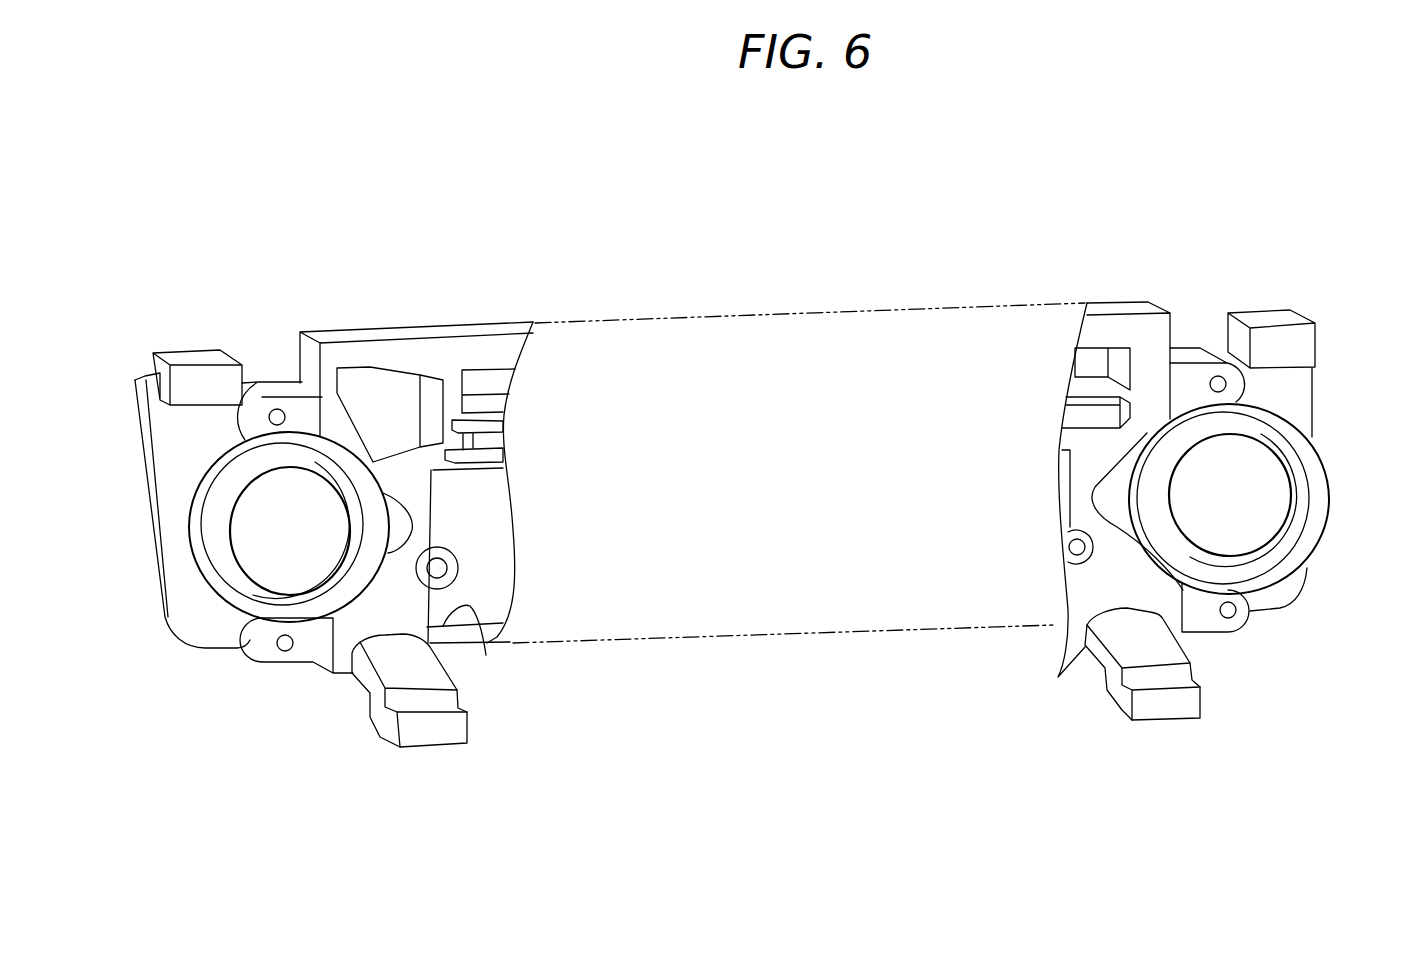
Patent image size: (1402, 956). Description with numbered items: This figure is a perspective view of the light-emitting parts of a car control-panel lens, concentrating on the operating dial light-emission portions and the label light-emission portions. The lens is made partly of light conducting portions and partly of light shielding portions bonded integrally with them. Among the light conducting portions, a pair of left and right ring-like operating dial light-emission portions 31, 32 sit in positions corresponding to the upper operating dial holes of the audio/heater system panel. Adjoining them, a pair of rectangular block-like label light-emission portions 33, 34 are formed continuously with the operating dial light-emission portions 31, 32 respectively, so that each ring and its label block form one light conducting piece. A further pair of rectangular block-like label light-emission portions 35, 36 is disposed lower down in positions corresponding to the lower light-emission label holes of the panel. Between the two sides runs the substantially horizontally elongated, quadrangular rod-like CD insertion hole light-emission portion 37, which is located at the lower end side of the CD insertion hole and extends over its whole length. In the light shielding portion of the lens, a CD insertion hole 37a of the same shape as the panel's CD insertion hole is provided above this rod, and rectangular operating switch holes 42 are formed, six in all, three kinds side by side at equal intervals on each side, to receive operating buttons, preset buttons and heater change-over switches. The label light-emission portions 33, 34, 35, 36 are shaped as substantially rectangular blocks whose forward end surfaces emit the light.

The operating dial light-emission portion 31 is at (1305, 533).
The operating dial light-emission portion 32 is at (222, 555).
The label light-emission portion 33 is at (1275, 342).
The label light-emission portion 34 is at (200, 385).
The label light-emission portion 35 is at (1192, 705).
The label light-emission portion 36 is at (463, 728).
The CD insertion hole light-emission portion 37 is at (478, 433).
The CD insertion hole 37a is at (1097, 352).
The operating switch hole 42 is at (486, 655).